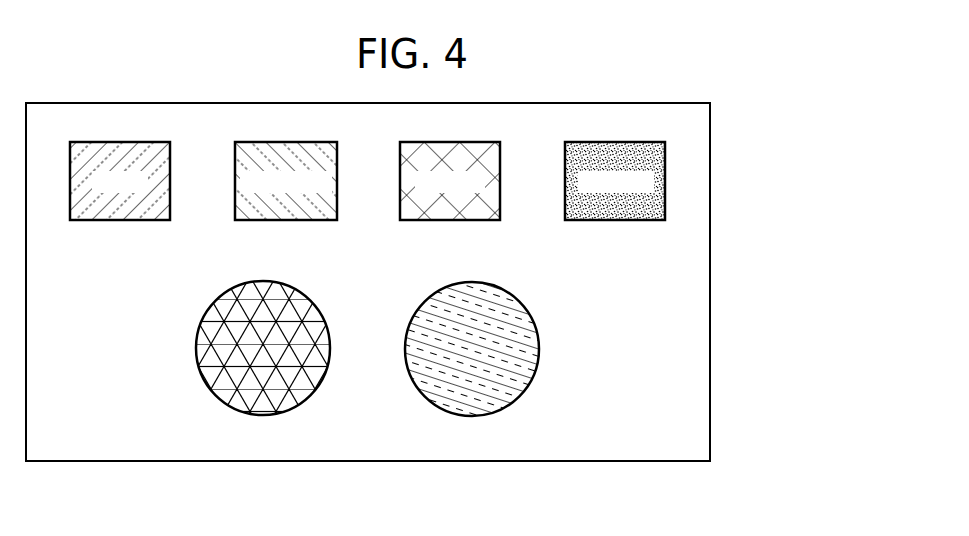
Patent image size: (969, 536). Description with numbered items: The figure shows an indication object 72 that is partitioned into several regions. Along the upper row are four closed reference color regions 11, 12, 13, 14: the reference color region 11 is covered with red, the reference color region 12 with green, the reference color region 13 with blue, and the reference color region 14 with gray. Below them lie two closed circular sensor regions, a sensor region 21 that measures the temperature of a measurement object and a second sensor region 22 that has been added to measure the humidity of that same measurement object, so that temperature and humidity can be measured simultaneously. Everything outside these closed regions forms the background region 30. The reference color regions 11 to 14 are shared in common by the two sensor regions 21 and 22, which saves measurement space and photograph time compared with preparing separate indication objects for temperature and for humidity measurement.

The reference color region 11 is at (112, 221).
The reference color region 12 is at (310, 221).
The reference color region 13 is at (428, 221).
The reference color region 14 is at (620, 221).
The sensor region 21 is at (202, 377).
The second sensor region 22 is at (412, 378).
The background region 30 is at (367, 284).
The indication object 72 is at (719, 122).